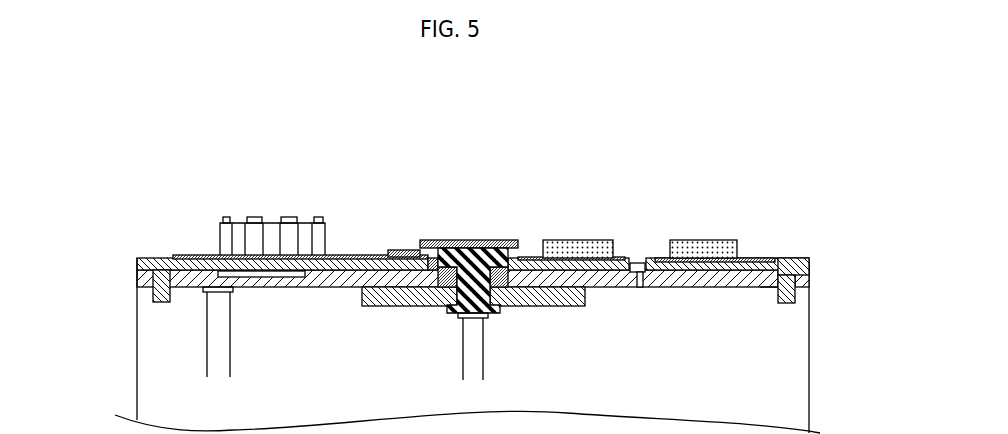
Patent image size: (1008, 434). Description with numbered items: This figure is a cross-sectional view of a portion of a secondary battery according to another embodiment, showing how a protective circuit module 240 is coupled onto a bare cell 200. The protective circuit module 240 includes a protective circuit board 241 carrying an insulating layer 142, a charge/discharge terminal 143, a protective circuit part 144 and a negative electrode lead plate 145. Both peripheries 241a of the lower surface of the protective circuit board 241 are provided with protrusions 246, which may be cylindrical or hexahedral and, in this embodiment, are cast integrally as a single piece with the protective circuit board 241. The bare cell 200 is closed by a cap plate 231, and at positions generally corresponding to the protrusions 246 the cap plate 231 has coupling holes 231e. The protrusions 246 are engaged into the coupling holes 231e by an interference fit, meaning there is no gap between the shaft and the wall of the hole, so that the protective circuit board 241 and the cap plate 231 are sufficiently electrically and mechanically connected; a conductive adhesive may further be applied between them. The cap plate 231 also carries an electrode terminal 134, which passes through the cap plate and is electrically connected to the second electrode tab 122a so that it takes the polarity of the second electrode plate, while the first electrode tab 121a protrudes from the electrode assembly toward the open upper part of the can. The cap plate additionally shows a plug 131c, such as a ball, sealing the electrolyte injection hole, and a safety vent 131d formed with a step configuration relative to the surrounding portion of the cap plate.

The bare cell 200 is at (130, 353).
The protective circuit module 240 is at (116, 210).
The protective circuit board 241 is at (137, 265).
The peripheries of lower surface of protective circuit board 241a is at (799, 255).
The cap plate 231 is at (138, 275).
The coupling holes 231e is at (767, 289).
The protrusions 246 is at (155, 298).
The insulating layer 142 is at (195, 255).
The charge/discharge terminal 143 is at (272, 230).
The protective circuit part 144 is at (685, 240).
The negative electrode lead plate 145 is at (432, 240).
The electrode terminal 134 is at (482, 242).
The plug 131c is at (642, 282).
The safety vent 131d is at (279, 290).
The first electrode tab 121a is at (210, 355).
The second electrode tab 122a is at (463, 353).